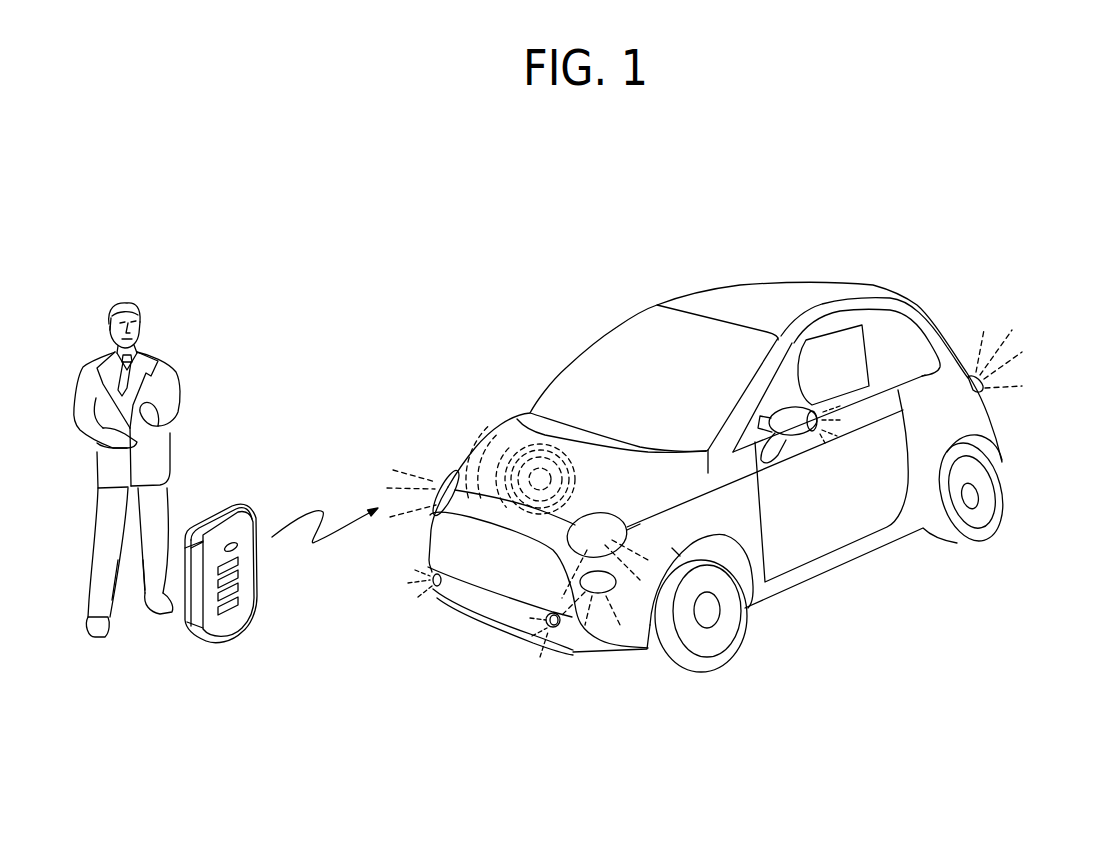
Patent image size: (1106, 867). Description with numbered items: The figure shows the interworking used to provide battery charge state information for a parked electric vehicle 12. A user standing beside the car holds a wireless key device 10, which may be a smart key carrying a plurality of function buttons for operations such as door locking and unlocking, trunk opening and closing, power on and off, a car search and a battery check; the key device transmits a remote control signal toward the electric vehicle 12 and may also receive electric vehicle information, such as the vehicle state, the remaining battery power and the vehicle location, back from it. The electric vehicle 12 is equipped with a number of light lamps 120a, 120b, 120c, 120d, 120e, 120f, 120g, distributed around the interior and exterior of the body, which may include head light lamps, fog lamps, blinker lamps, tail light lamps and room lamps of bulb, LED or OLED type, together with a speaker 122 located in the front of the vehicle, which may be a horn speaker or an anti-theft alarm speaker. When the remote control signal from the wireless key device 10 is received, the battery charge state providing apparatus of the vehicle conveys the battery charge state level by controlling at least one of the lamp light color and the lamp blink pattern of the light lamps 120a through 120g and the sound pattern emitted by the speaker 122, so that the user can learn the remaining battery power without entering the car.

The wireless key device 10 is at (206, 656).
The electric vehicle 12 is at (897, 279).
The light lamp 120a is at (447, 478).
The light lamp 120b is at (677, 553).
The light lamp 120c is at (602, 594).
The light lamp 120d is at (434, 589).
The light lamp 120e is at (553, 628).
The light lamp 120f is at (805, 405).
The light lamp 120g is at (985, 381).
The speaker 122 is at (534, 468).